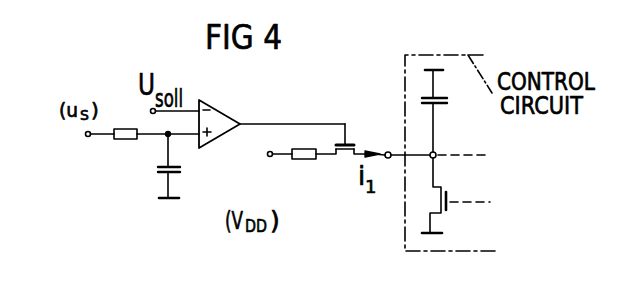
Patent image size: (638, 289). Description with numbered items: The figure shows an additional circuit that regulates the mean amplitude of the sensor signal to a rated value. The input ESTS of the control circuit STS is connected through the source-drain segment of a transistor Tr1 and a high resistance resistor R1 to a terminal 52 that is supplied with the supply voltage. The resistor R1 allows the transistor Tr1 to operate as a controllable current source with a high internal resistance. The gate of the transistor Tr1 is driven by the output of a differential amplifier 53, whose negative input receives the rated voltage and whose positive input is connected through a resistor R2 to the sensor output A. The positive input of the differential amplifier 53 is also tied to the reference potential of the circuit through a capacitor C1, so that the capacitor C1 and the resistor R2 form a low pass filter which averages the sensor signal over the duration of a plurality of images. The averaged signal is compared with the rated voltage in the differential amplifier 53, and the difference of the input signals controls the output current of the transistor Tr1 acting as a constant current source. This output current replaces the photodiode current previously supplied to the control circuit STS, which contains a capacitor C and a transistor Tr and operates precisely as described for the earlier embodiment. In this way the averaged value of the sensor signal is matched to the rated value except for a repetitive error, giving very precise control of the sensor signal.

The terminal 52 is at (270, 173).
The differential amplifier 53 is at (226, 99).
The sensor output A is at (93, 152).
The high resistance resistor R1 is at (304, 173).
The resistor R2 is at (124, 154).
The capacitor C1 is at (185, 166).
The transistor Tr1 is at (348, 131).
The capacitor of the control circuit C is at (441, 111).
The transistor of the control circuit Tr is at (456, 198).
The input of the control circuit ESTS is at (388, 158).
The control circuit STS is at (483, 251).